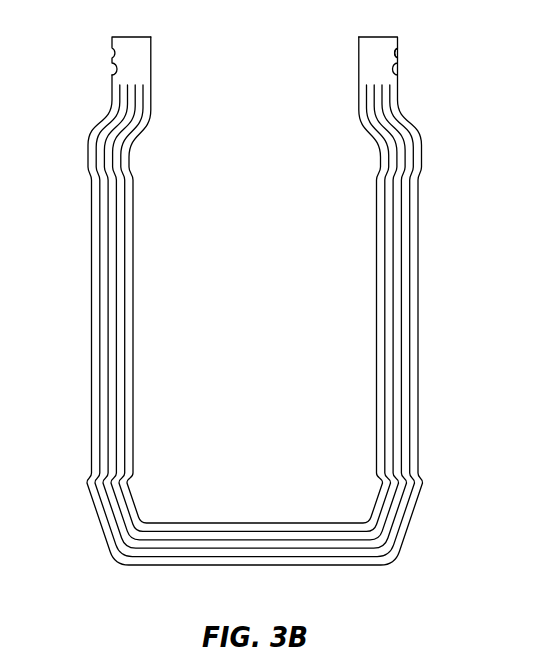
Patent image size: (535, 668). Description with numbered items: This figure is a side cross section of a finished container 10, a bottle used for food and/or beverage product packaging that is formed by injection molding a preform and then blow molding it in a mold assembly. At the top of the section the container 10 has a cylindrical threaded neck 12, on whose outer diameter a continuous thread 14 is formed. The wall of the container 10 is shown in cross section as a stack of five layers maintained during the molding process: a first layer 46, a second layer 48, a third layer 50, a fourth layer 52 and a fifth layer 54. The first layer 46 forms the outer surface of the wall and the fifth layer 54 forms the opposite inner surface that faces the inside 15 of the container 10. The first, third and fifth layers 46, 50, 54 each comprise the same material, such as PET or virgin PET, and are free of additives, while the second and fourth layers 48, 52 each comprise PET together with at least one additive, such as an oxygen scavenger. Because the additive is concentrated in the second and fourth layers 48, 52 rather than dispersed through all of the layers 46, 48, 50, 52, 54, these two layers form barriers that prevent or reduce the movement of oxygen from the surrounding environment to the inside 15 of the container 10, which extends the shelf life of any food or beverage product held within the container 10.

The container 10 is at (443, 396).
The cylindrical threaded neck 12 is at (398, 83).
The continuous thread 14 is at (401, 48).
The inside 15 is at (340, 255).
The first layer 46 is at (96, 205).
The second layer 48 is at (107, 238).
The third layer 50 is at (113, 260).
The fourth layer 52 is at (121, 290).
The fifth layer 54 is at (127, 318).